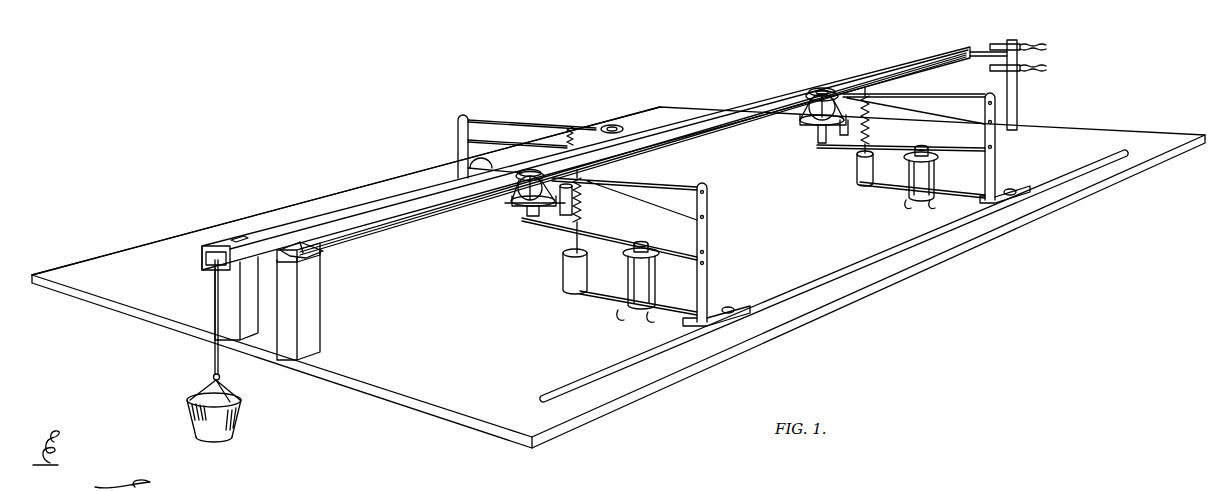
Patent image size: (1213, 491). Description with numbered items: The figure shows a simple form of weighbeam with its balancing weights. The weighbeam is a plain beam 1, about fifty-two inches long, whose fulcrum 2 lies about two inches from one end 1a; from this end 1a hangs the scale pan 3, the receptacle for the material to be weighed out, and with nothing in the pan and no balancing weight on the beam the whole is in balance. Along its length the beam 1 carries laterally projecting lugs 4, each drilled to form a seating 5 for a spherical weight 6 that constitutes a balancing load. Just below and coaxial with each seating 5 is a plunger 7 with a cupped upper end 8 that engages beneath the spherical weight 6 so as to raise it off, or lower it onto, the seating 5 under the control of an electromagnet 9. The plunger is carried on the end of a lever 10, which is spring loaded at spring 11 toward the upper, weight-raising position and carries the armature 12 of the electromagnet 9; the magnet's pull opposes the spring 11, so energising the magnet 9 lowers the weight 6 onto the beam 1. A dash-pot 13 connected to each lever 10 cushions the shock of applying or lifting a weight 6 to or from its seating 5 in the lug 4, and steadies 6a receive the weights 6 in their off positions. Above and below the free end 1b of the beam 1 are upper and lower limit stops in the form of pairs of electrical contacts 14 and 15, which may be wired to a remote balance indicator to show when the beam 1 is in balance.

The beam 1 is at (700, 118).
The end of the beam 1a is at (222, 246).
The free end of the beam 1b is at (956, 48).
The fulcrum 2 is at (320, 255).
The scale pan 3 is at (242, 408).
The lug 4 is at (511, 205).
The seating 5 is at (518, 207).
The spherical weight 6 is at (462, 172).
The steady 6a is at (532, 170).
The plunger 7 is at (530, 216).
The cupped upper end 8 is at (565, 213).
The electromagnet 9 is at (628, 292).
The lever 10 is at (460, 150).
The spring 11 is at (572, 128).
The armature 12 is at (633, 248).
The dash-pot 13 is at (563, 270).
The upper limit stop contacts 14 is at (1006, 42).
The lower limit stop contacts 15 is at (992, 70).